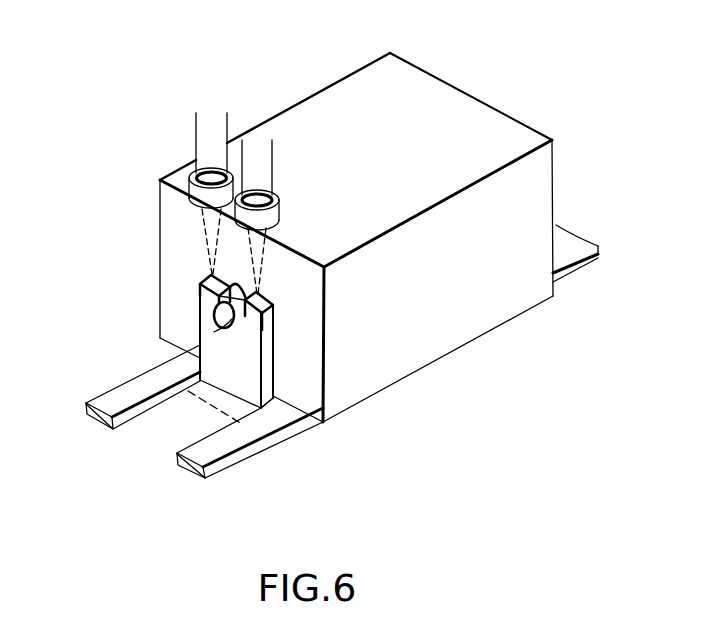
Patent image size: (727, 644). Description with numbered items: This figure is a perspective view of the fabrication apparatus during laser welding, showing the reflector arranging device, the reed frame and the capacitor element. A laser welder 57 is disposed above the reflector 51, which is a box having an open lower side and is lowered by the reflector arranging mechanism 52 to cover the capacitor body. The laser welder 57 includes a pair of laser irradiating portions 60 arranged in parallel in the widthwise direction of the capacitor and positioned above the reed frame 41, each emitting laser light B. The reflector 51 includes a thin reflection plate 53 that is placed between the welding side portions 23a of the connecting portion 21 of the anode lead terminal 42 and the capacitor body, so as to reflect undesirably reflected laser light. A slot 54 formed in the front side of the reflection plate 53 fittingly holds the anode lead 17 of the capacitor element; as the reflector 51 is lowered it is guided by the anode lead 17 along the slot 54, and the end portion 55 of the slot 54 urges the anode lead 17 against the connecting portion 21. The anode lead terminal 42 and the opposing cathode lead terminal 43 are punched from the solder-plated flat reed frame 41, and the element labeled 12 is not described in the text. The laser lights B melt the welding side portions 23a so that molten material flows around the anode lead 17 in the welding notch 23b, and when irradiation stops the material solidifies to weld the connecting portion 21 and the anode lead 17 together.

The laser welder 57 is at (104, 80).
The reflector arranging mechanism 52 is at (350, 53).
The reflector 51 is at (290, 107).
The reflection plate 53 is at (170, 246).
The laser irradiating portion 60 is at (196, 124).
The laser light B is at (202, 212).
The connecting portion 21 is at (249, 364).
The welding side portion 23a is at (200, 287).
The welding notch 23b is at (162, 338).
The end portion of the slot 55 is at (215, 310).
The anode lead 17 is at (218, 326).
The slot 54 is at (273, 340).
The lead frame 12 is at (295, 439).
The reed frame 41 is at (99, 389).
The anode lead terminal 42 is at (229, 464).
The cathode lead terminal 43 is at (575, 282).